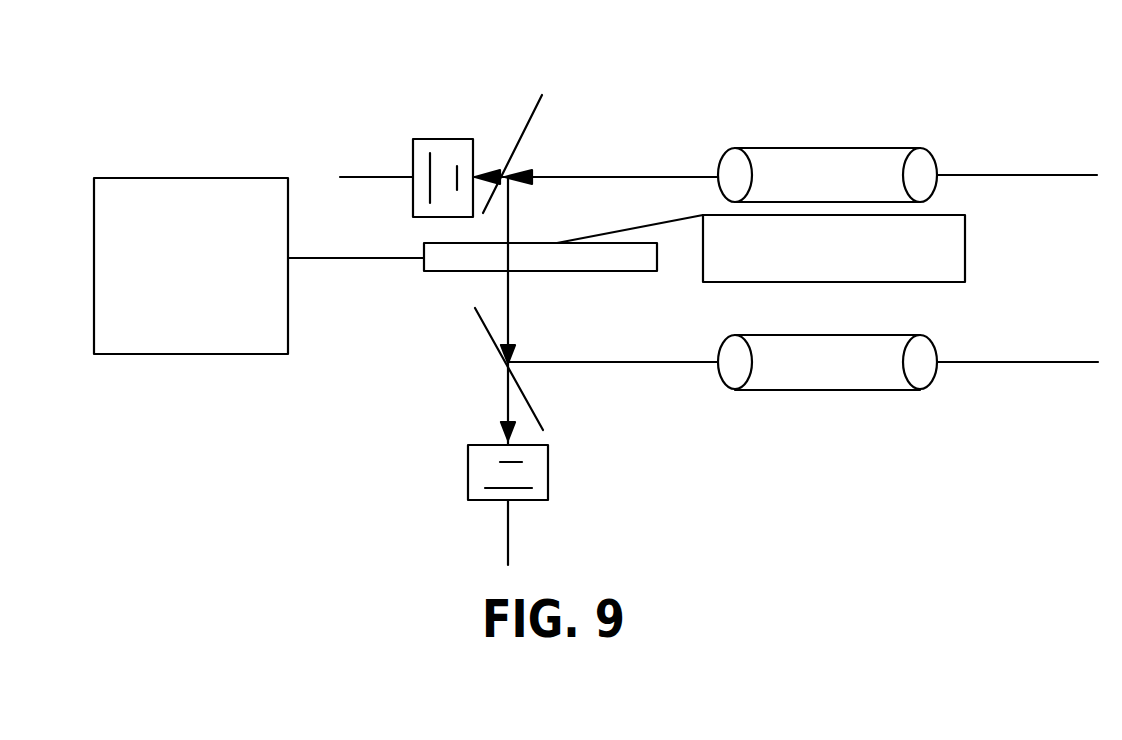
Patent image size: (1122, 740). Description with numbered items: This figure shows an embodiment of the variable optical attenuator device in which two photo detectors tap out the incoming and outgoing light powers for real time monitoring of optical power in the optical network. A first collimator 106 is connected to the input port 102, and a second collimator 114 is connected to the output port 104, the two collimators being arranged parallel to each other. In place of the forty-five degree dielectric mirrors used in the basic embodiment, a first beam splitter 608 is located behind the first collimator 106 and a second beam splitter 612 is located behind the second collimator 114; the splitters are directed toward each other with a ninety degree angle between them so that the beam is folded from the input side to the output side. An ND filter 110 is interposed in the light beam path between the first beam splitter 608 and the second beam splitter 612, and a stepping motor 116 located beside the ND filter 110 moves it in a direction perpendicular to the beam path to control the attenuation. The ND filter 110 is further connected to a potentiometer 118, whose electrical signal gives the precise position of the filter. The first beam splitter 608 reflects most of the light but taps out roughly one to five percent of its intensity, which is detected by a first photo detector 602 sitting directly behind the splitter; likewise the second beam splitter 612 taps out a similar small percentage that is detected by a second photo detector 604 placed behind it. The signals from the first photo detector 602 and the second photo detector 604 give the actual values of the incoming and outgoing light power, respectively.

The input port 102 is at (1030, 173).
The output port 104 is at (1022, 362).
The first collimator 106 is at (837, 148).
The ND filter 110 is at (518, 243).
The second collimator 114 is at (818, 390).
The stepping motor 116 is at (215, 178).
The potentiometer 118 is at (965, 247).
The first photo detector 602 is at (440, 217).
The second photo detector 604 is at (468, 470).
The first beam splitter 608 is at (530, 123).
The second beam splitter 612 is at (523, 395).